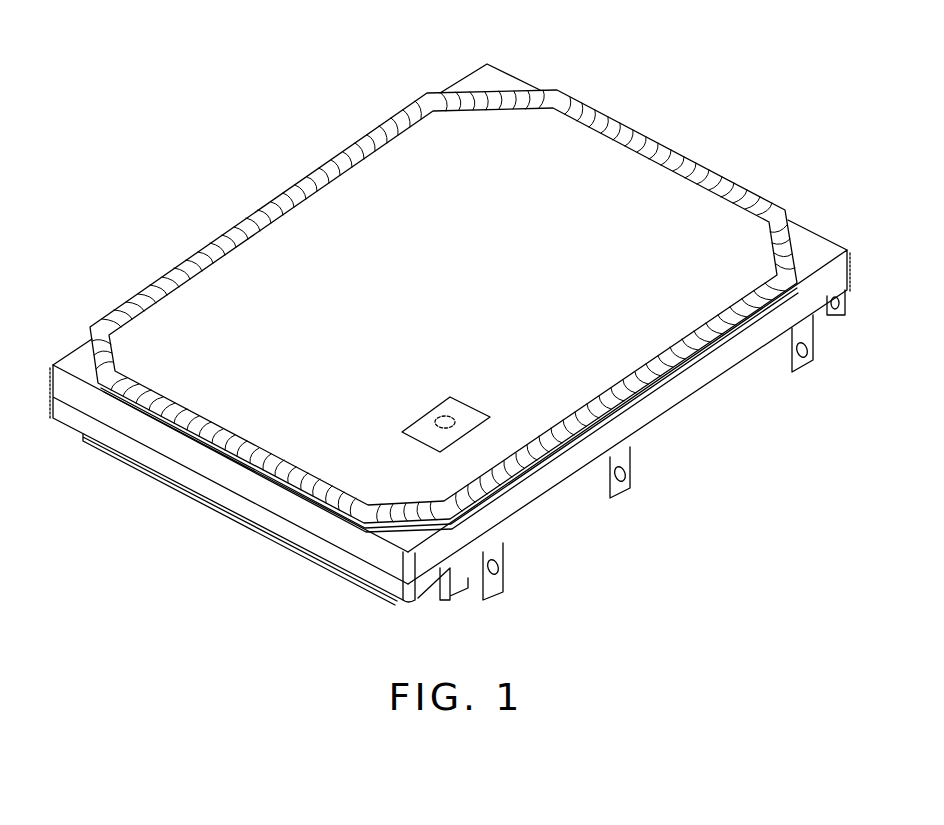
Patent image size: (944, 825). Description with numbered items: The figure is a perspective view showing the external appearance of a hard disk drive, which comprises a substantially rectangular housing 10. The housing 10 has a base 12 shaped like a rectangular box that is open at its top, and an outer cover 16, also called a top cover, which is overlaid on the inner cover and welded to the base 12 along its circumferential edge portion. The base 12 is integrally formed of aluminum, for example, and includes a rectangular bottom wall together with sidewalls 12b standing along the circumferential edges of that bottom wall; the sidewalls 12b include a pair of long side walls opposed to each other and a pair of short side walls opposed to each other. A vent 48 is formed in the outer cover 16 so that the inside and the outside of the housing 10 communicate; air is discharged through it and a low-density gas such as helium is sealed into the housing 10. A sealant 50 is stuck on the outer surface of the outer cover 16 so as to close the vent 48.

The housing 10 is at (450, 334).
The base 12 is at (450, 334).
The sidewalls 12b is at (305, 537).
The outer cover 16 is at (444, 309).
The vent 48 is at (440, 427).
The sealant 50 is at (445, 415).